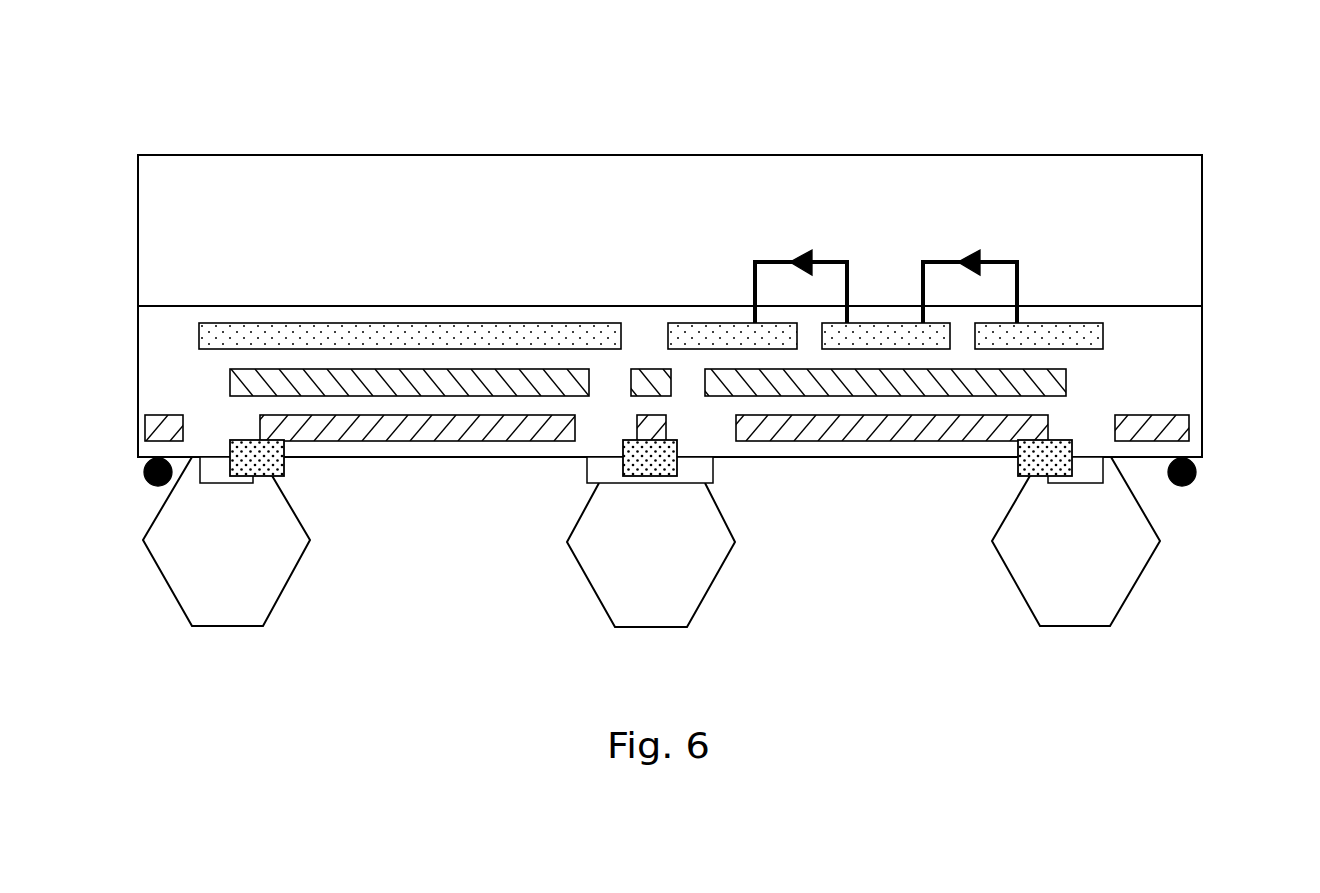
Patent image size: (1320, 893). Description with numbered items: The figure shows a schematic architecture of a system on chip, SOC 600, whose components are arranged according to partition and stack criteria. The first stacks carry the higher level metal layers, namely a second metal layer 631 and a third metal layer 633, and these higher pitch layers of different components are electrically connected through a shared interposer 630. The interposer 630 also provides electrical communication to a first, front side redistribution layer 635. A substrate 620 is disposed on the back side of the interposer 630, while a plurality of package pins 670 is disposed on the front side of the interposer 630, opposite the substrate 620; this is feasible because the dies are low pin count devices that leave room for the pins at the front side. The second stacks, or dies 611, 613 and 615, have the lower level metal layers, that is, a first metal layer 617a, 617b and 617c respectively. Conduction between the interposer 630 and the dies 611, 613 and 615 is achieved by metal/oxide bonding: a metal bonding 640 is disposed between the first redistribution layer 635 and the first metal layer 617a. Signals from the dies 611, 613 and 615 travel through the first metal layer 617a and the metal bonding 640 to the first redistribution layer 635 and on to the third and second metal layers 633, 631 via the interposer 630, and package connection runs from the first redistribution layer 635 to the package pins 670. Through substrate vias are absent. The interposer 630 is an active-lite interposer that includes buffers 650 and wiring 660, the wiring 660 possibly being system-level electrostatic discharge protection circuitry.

The SOC 600 is at (112, 78).
The second stack/die 611 is at (273, 570).
The second stack/die 613 is at (698, 570).
The second stack/die 615 is at (1123, 570).
The first metal layer 617a is at (217, 475).
The first metal layer 617b is at (587, 473).
The first metal layer 617c is at (1093, 472).
The substrate 620 is at (1195, 237).
The interposer 630 is at (1193, 393).
The second metal layer 631 is at (210, 338).
The third metal layer 633 is at (1066, 383).
The first redistribution layer 635 is at (157, 426).
The metal bonding 640 is at (284, 465).
The buffers 650 is at (972, 250).
The wiring 660 is at (802, 250).
The package pins 670 is at (1196, 472).